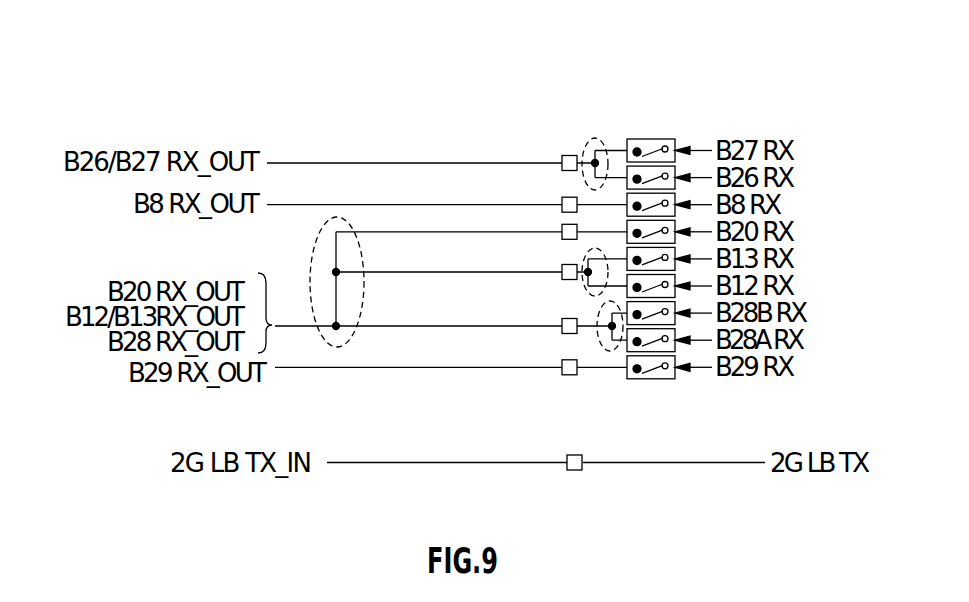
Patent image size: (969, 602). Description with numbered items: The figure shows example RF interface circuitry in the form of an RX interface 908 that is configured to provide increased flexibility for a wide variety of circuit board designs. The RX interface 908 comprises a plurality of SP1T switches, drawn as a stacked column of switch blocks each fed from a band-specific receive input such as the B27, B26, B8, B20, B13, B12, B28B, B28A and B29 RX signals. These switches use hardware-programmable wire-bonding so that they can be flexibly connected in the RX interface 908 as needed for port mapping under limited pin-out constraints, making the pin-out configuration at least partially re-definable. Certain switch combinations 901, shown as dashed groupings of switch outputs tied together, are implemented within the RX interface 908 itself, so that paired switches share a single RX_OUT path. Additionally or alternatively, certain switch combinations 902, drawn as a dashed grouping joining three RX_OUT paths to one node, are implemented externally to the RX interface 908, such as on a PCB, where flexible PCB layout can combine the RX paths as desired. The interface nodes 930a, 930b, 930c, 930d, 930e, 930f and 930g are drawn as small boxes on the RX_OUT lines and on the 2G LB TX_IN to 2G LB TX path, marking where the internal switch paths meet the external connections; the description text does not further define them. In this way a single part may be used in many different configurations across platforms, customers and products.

The RX interface 908 is at (581, 93).
The switch combinations 901 is at (592, 140).
The switch combinations 902 is at (313, 249).
The 2G LB TX port coupler 930a is at (573, 455).
The B29 RX port coupler 930b is at (568, 375).
The B28 RX port coupler 930c is at (567, 335).
The B12/B13 RX port coupler 930d is at (562, 264).
The B20 RX port coupler 930e is at (562, 226).
The B8 RX port coupler 930f is at (567, 197).
The B26/B27 RX port coupler 930g is at (567, 155).